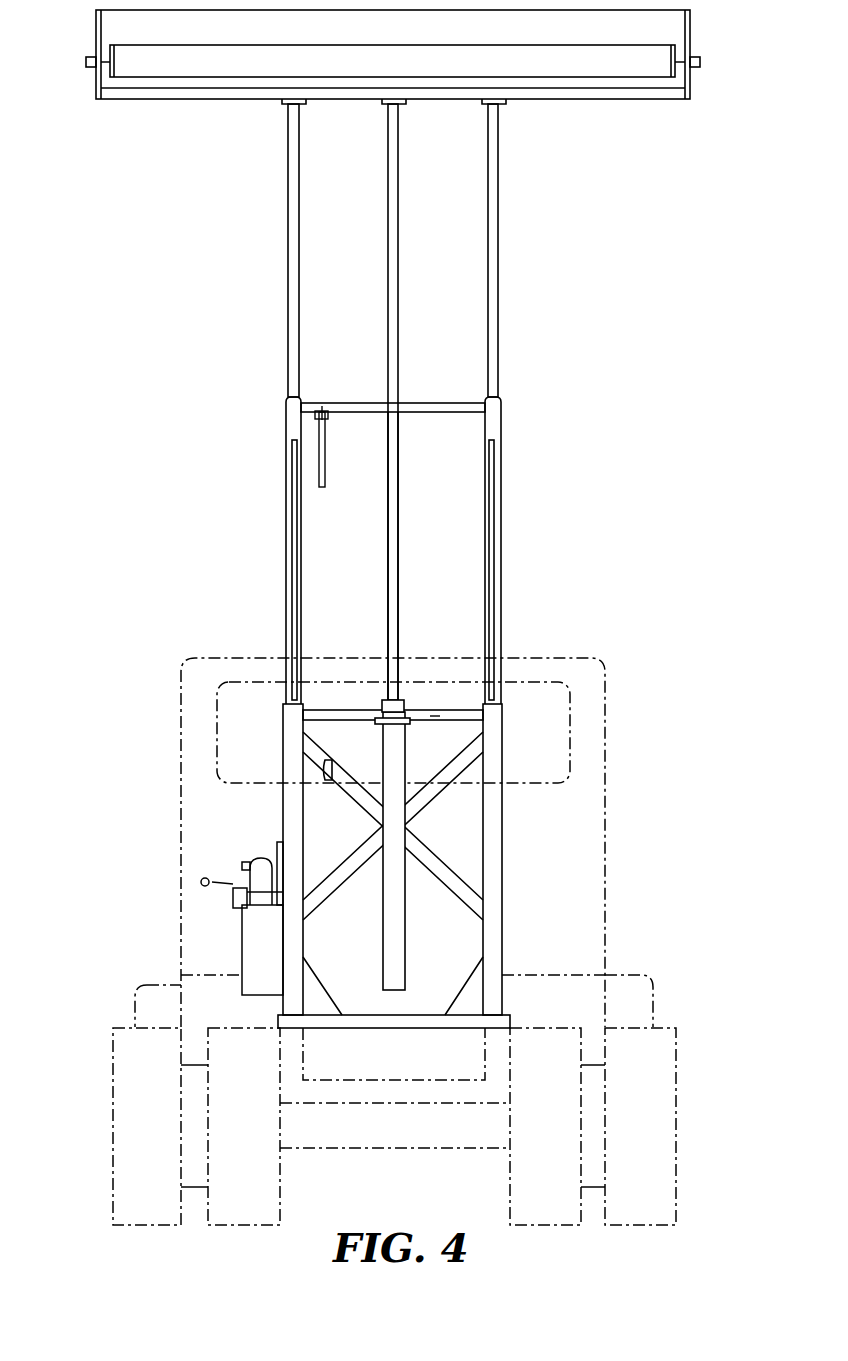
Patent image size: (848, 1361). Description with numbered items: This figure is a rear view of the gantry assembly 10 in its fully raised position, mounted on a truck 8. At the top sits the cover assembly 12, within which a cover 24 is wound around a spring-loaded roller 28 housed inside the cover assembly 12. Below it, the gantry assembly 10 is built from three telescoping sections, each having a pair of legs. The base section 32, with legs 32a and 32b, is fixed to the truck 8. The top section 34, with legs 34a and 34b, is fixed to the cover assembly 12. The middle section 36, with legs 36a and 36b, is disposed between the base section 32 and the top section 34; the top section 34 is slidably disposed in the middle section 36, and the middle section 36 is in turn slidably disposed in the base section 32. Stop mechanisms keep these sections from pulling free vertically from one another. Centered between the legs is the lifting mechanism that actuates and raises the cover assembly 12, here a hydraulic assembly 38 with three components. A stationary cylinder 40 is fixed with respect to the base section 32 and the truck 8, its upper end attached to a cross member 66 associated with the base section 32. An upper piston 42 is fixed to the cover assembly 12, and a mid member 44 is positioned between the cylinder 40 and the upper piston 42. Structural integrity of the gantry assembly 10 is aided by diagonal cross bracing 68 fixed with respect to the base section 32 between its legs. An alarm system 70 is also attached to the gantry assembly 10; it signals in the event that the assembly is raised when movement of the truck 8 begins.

The truck 8 is at (104, 842).
The gantry assembly 10 is at (694, 105).
The cover assembly 12 is at (96, 30).
The cover 24 is at (140, 68).
The spring-loaded roller 28 is at (700, 62).
The base section 32 is at (322, 866).
The leg of base section 32a is at (283, 1000).
The leg of base section 32b is at (502, 990).
The top section 34 is at (388, 250).
The leg of top section 34a is at (288, 256).
The leg of top section 34b is at (497, 256).
The middle section 36 is at (382, 550).
The leg of middle section 36a is at (286, 507).
The leg of middle section 36b is at (500, 507).
The hydraulic assembly 38 is at (378, 582).
The stationary cylinder 40 is at (407, 930).
The upper piston 42 is at (388, 182).
The mid member 44 is at (385, 543).
The cross member 66 is at (448, 705).
The diagonal cross bracing 68 is at (440, 797).
The alarm system 70 is at (320, 437).